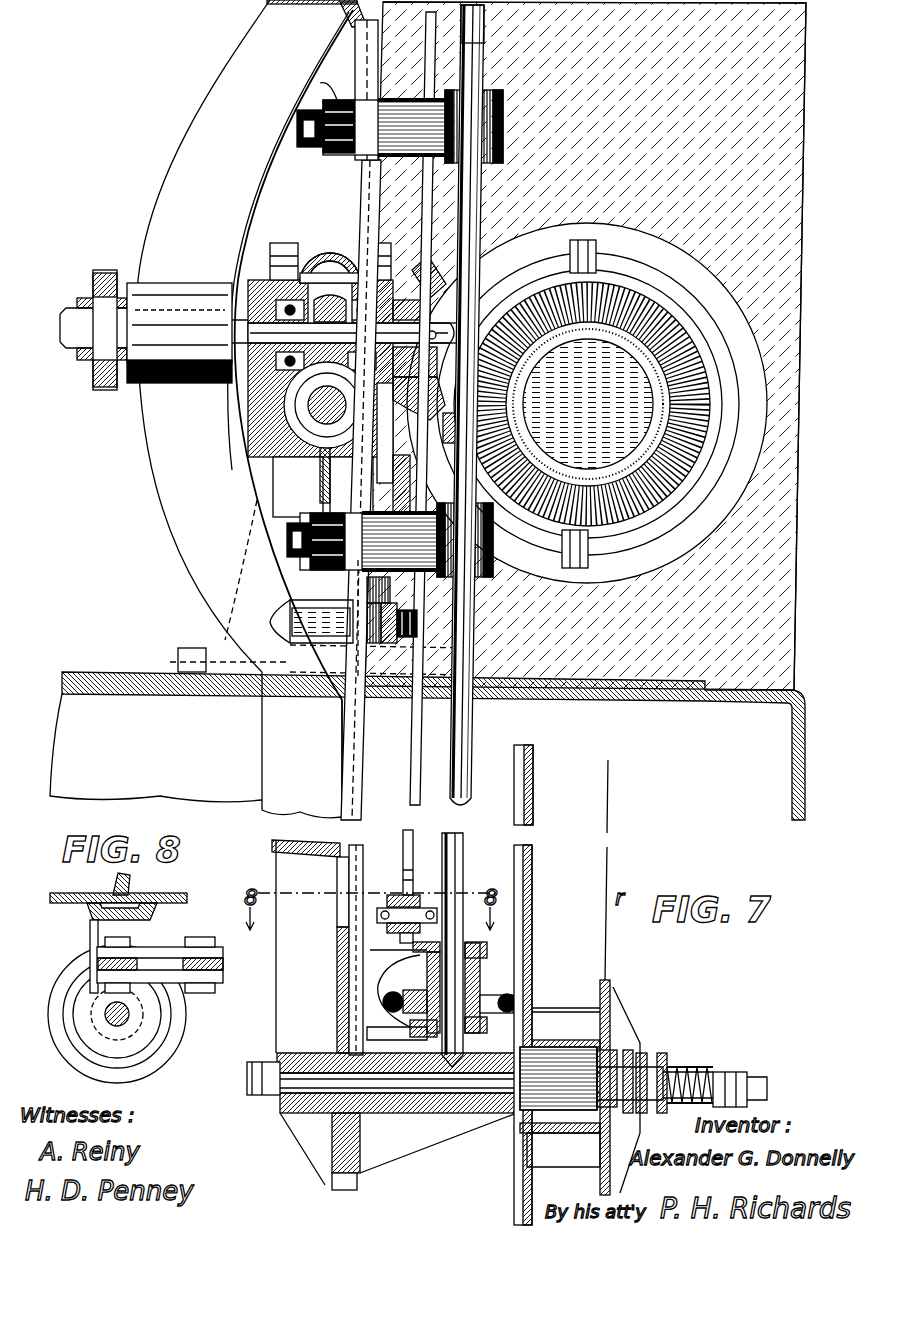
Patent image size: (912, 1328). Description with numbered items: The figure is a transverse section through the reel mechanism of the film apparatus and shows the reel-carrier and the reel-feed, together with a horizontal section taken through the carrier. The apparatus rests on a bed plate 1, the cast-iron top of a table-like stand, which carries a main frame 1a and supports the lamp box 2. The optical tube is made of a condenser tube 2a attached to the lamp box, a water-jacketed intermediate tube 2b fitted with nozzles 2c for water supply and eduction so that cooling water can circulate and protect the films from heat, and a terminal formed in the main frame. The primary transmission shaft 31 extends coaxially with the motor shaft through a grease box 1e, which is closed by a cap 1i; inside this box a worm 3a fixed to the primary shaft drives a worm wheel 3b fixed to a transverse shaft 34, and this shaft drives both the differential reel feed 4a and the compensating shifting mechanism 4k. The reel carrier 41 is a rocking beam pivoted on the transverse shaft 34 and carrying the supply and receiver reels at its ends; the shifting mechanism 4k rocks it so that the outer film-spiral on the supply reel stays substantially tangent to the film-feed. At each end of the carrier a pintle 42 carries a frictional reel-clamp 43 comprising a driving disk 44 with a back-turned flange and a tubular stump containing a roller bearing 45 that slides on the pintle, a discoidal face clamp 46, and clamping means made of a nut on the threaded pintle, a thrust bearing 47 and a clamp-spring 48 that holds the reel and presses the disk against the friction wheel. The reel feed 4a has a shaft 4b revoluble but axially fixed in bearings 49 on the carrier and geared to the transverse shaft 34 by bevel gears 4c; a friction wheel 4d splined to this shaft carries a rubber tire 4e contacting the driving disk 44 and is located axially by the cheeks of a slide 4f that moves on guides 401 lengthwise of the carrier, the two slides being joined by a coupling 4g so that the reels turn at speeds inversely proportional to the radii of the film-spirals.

In FIG. 7, the bed plate 1 is at (637, 684).
In FIG. 7, the main frame 1a is at (180, 660).
In FIG. 7, the grease box 1e is at (310, 398).
In FIG. 7, the cap 1i is at (336, 272).
In FIG. 7, the lamp box 2 is at (797, 165).
In FIG. 7, the condenser tube 2a is at (680, 300).
In FIG. 7, the water-jacketed intermediate tube 2b is at (606, 290).
In FIG. 7, the nozzles 2c is at (575, 250).
In FIG. 7, the worm 3a is at (353, 380).
In FIG. 7, the worm wheel 3b is at (330, 288).
In FIG. 7, the differential reel feed 4a is at (340, 500).
In FIG. 7, the shaft 4b is at (490, 196).
In FIG. 8, the shaft 4b is at (127, 1016).
In FIG. 7, the bevel gears 4c is at (436, 292).
In FIG. 7, the friction wheel 4d is at (490, 994).
In FIG. 7, the rubber tire 4e is at (527, 997).
In FIG. 7, the slide 4f is at (377, 970).
In FIG. 8, the slide 4f is at (97, 932).
In FIG. 7, the coupling 4g is at (426, 210).
In FIG. 7, the compensating shifting mechanism 4k is at (343, 620).
In FIG. 7, the primary transmission shaft 31 is at (316, 420).
In FIG. 7, the transverse shaft 34 is at (255, 320).
In FIG. 7, the reel carrier 41 is at (208, 409).
In FIG. 7, the pintle 42 is at (306, 1070).
In FIG. 7, the frictional reel-clamp 43 is at (615, 978).
In FIG. 7, the driving disk 44 is at (523, 852).
In FIG. 7, the roller bearing 45 is at (618, 1040).
In FIG. 7, the discoidal face clamp 46 is at (613, 1000).
In FIG. 7, the thrust bearing 47 is at (650, 1070).
In FIG. 7, the clamp-spring 48 is at (730, 1080).
In FIG. 7, the bearings 49 is at (500, 140).
In FIG. 7, the guides 401 is at (345, 70).
In FIG. 8, the guides 401 is at (155, 912).